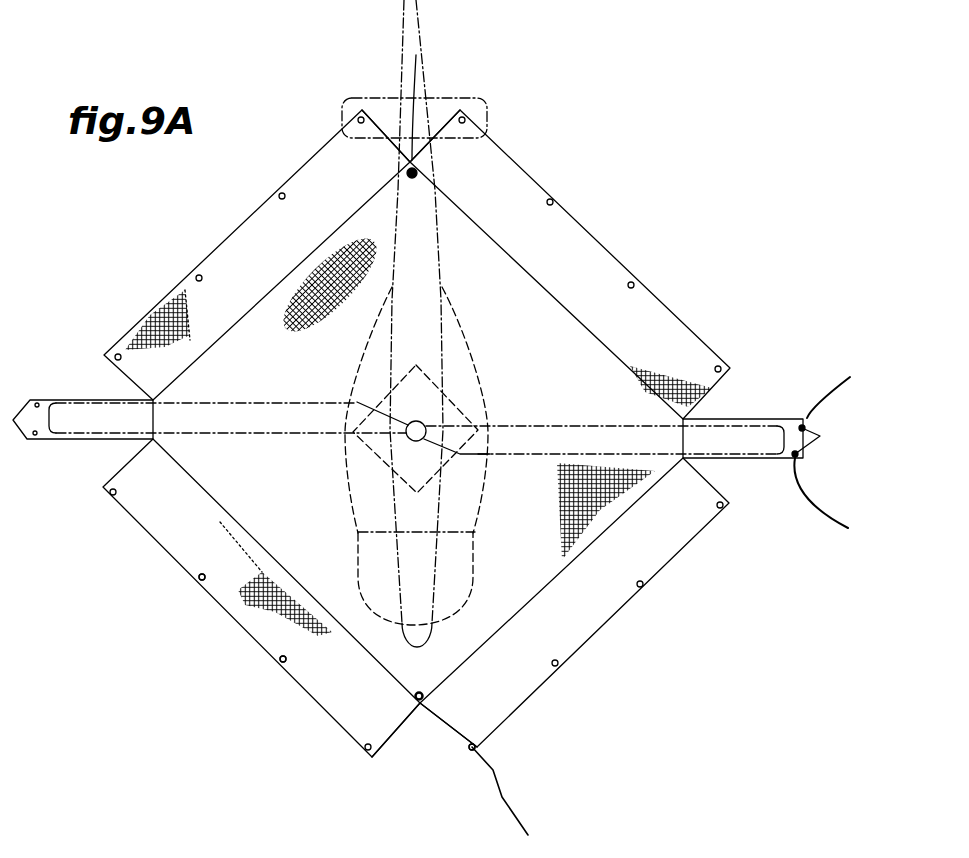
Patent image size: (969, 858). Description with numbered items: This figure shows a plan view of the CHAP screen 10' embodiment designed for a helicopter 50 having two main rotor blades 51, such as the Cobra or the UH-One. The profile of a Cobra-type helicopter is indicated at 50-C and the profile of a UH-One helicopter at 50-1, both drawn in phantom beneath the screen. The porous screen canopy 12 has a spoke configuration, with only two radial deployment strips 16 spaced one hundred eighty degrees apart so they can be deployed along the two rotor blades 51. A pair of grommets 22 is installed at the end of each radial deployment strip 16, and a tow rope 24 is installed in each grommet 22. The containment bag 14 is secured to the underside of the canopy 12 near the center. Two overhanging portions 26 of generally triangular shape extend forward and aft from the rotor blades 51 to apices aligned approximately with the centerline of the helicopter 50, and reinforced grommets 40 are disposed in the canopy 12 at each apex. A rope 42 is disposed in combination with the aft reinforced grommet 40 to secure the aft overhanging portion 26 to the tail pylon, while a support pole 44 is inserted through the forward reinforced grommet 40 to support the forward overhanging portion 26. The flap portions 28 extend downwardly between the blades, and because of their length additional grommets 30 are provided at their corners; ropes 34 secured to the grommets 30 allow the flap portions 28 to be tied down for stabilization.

The CHAP screen 10' is at (571, 264).
The porous screen canopy 12 is at (627, 625).
The containment bag 14 is at (413, 387).
The radial deployment strips 16 is at (45, 432).
The grommets 22 is at (815, 440).
The tow rope 24 is at (810, 422).
The overhanging portions 26 is at (527, 398).
The flap portions 28 is at (544, 273).
The grommets 30 is at (203, 575).
The ropes 34 is at (517, 811).
The reinforced grommets 40 is at (418, 176).
The rope 42 is at (412, 110).
The support pole 44 is at (425, 722).
The helicopter 50 is at (500, 364).
The UH-1 helicopter profile 50-1 is at (348, 487).
The Cobra-type helicopter profile 50-C is at (392, 518).
The main rotor blades 51 is at (273, 400).